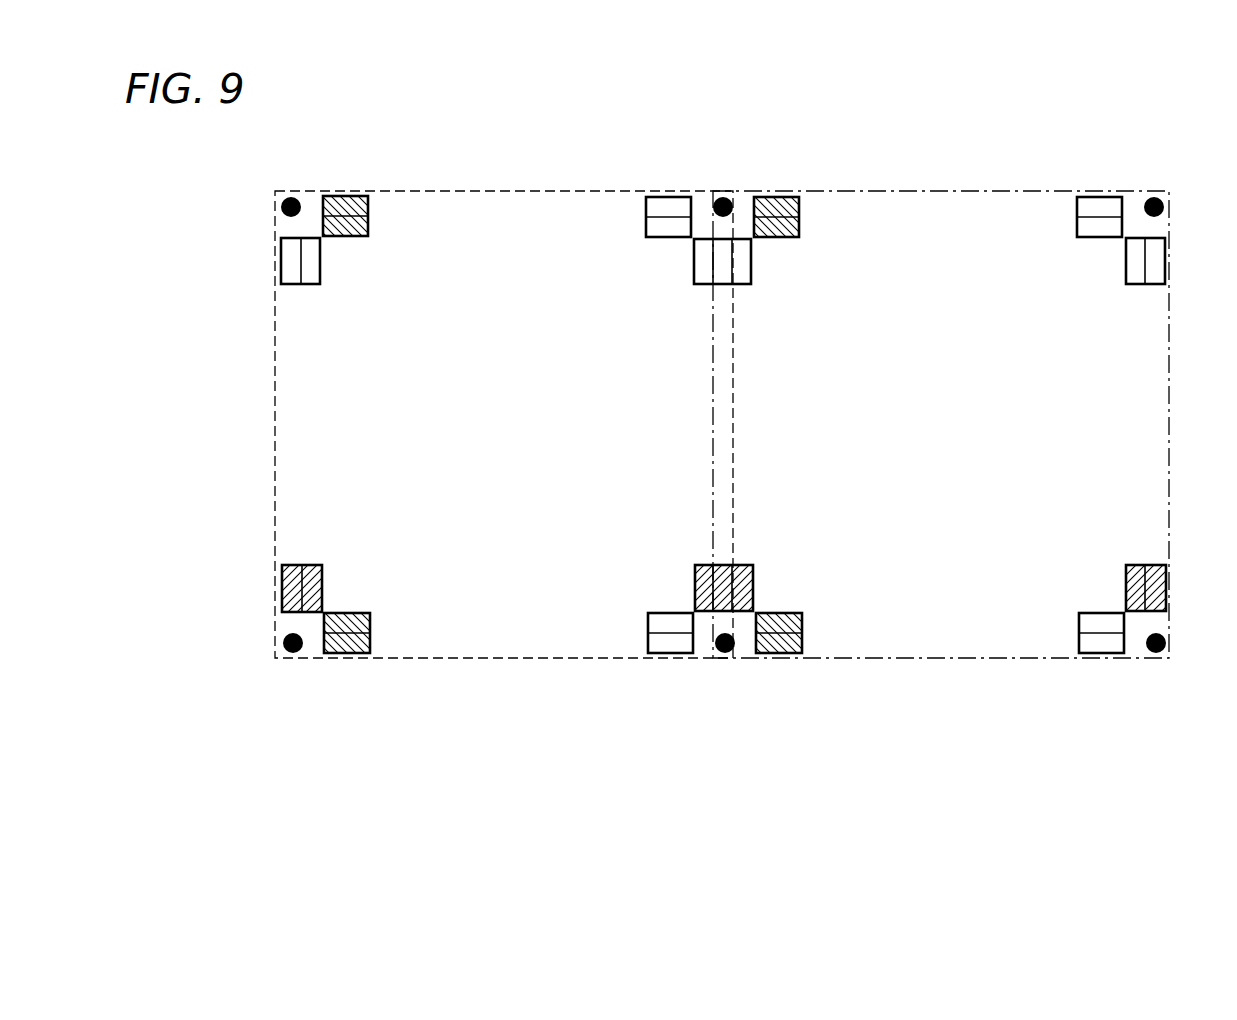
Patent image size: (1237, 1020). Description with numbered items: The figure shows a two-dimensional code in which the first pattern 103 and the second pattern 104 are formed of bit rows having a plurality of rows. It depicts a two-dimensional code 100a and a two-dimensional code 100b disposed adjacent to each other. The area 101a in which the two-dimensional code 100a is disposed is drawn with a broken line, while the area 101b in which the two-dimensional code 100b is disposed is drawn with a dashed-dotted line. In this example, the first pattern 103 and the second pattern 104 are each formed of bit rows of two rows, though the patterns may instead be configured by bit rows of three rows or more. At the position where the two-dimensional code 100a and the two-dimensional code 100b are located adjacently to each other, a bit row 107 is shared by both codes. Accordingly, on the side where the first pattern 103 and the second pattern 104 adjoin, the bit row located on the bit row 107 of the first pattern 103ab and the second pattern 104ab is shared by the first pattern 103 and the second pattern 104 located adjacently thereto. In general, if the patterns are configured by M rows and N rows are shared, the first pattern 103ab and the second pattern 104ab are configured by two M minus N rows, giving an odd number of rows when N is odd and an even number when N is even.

The two-dimensional code 100a is at (504, 459).
The two-dimensional code 100b is at (941, 459).
The area 101a is at (482, 190).
The area 101b is at (965, 163).
The first pattern 103 is at (281, 257).
The first pattern 103ab is at (693, 264).
The second pattern 104 is at (345, 195).
The second pattern 104ab is at (695, 583).
The bit row 107 is at (730, 674).